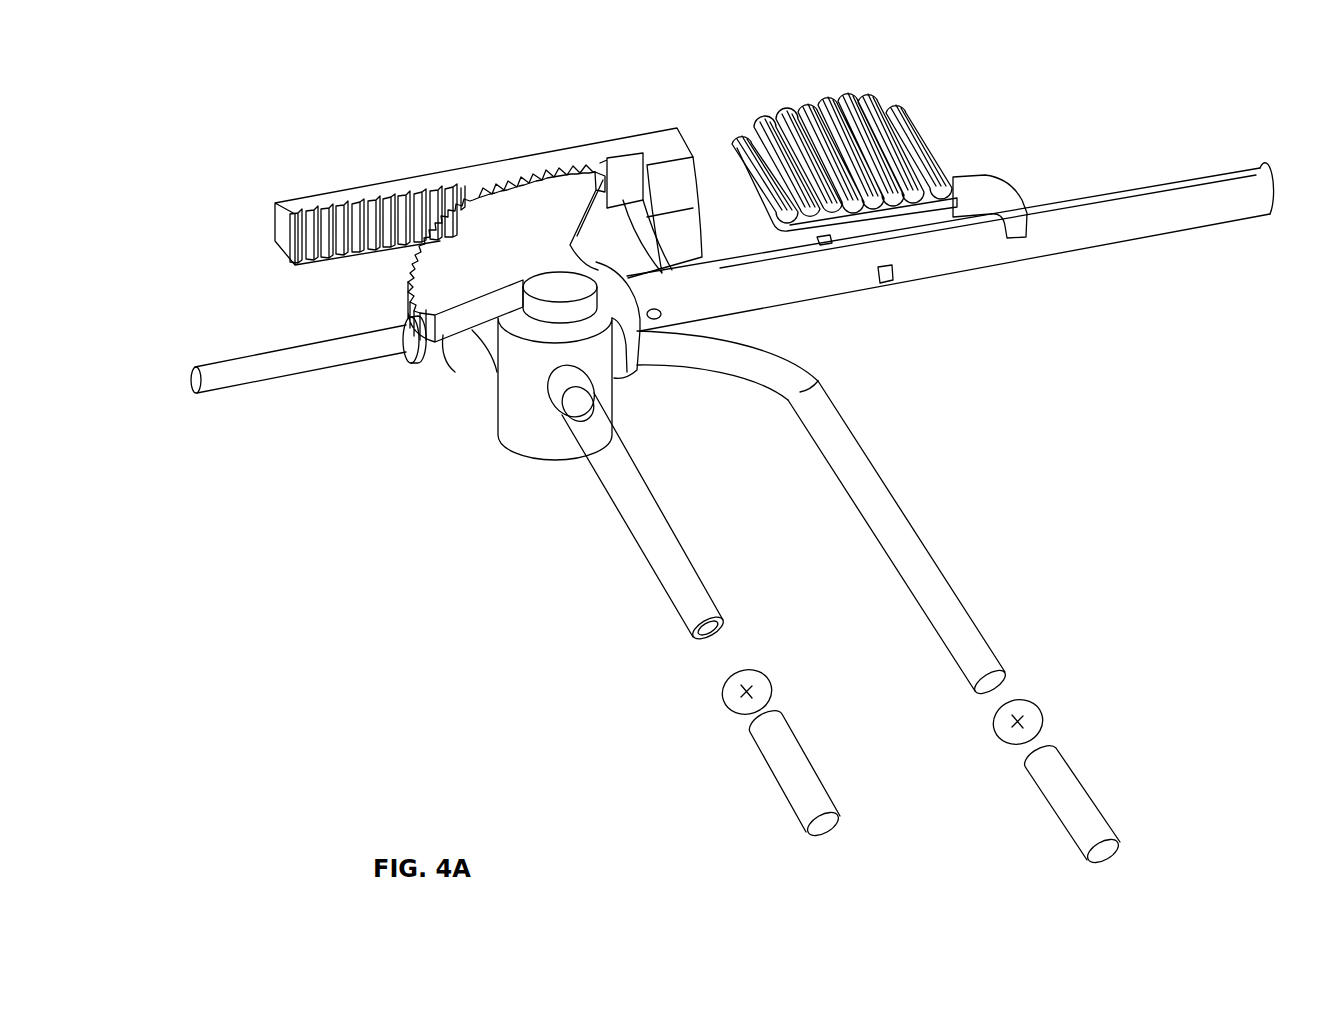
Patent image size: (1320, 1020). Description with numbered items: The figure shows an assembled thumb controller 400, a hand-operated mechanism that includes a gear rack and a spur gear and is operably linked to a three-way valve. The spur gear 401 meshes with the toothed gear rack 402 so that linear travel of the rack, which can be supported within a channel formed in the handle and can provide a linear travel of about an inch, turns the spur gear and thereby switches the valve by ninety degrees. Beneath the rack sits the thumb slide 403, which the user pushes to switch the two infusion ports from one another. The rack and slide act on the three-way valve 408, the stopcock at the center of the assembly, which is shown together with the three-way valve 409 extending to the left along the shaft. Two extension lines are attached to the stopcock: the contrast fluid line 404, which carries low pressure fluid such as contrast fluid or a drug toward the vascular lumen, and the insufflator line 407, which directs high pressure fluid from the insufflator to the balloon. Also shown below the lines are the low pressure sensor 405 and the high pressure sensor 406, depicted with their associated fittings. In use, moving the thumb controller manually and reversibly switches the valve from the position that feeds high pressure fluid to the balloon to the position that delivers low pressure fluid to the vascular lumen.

The thumb controller 400 is at (217, 84).
The gear sector 401 is at (416, 273).
The rack 402 is at (340, 186).
The thumb slide 403 is at (934, 149).
The contrast fluid line 404 is at (886, 512).
The low pressure sensor 405 is at (1047, 707).
The high pressure sensor 406 is at (721, 700).
The insufflator line 407 is at (656, 552).
The 3-way valve 408 is at (510, 410).
The 3-way valve 409 is at (286, 358).